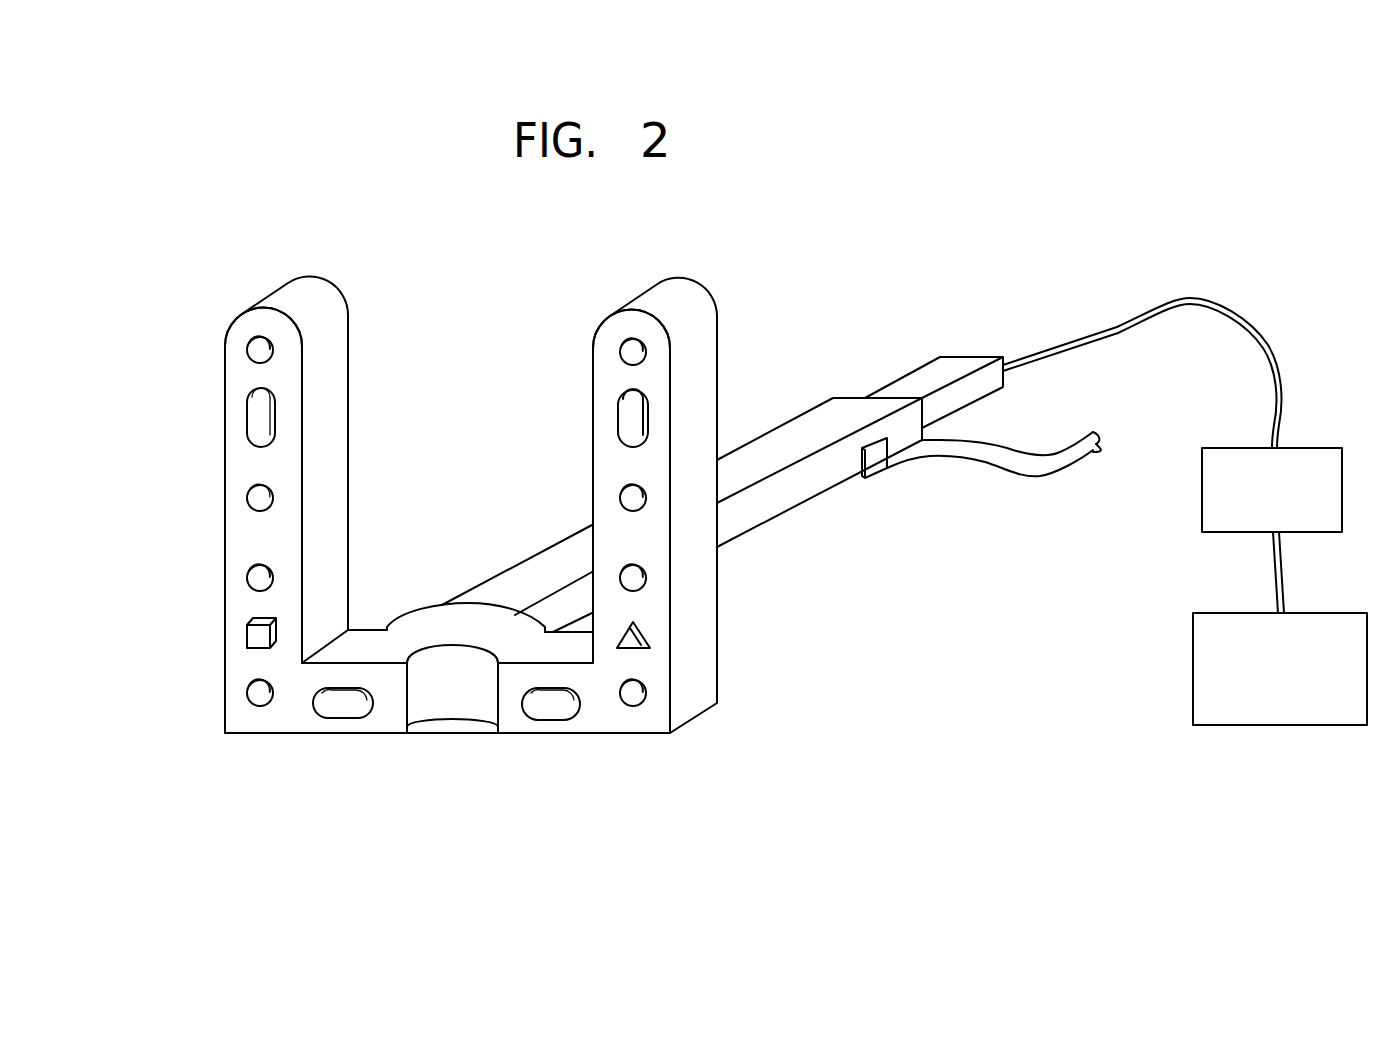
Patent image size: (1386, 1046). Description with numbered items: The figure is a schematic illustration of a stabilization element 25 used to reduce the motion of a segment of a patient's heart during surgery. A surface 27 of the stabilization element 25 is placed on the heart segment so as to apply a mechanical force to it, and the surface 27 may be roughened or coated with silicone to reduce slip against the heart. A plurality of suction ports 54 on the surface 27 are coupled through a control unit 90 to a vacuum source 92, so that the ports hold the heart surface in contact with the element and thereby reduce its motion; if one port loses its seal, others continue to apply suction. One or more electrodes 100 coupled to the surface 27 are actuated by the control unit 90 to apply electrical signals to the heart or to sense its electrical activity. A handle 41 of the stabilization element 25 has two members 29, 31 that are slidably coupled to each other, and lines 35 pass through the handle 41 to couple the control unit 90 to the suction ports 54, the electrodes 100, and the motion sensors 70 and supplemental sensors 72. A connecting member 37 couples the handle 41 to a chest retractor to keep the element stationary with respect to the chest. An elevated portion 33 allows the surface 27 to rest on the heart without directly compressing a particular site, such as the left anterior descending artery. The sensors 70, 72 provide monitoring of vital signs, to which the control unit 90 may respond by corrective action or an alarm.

The stabilization element 25 is at (190, 396).
The surface 27 is at (252, 328).
The member 29 is at (537, 565).
The member 31 is at (923, 380).
The elevated portion 33 is at (483, 710).
The lines 35 is at (1240, 317).
The connecting member 37 is at (997, 460).
The handle 41 is at (722, 475).
The suction ports 54 is at (257, 497).
The motion sensors 70 is at (255, 637).
The supplemental sensors 72 is at (648, 637).
The control unit 90 is at (1317, 448).
The vacuum source 92 is at (1313, 613).
The electrodes 100 is at (255, 422).